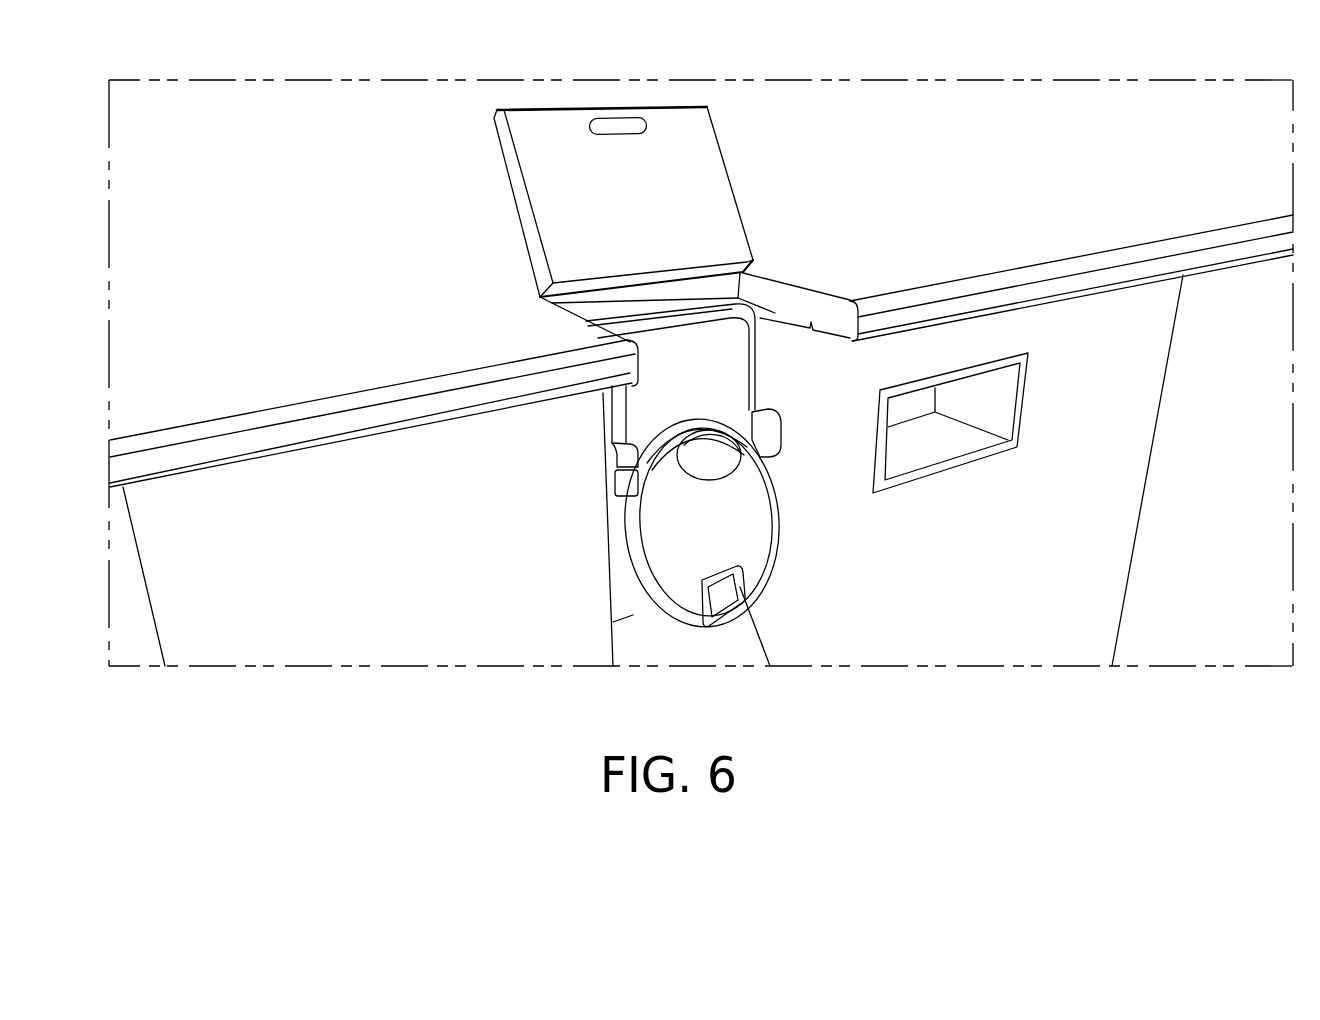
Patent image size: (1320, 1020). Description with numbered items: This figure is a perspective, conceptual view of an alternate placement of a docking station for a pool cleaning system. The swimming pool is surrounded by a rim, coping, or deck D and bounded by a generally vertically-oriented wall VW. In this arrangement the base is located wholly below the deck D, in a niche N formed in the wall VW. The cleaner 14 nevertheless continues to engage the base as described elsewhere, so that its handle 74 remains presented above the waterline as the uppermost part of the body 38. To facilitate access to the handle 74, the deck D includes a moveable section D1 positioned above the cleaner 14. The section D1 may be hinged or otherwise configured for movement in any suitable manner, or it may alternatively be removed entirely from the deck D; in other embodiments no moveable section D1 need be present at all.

The vertically-oriented wall VW is at (273, 623).
The moveable section D1 is at (518, 180).
The cleaner 14 is at (573, 513).
The body 38 is at (640, 553).
The handle 74 is at (760, 420).
The niche N is at (663, 645).
The deck D is at (893, 260).